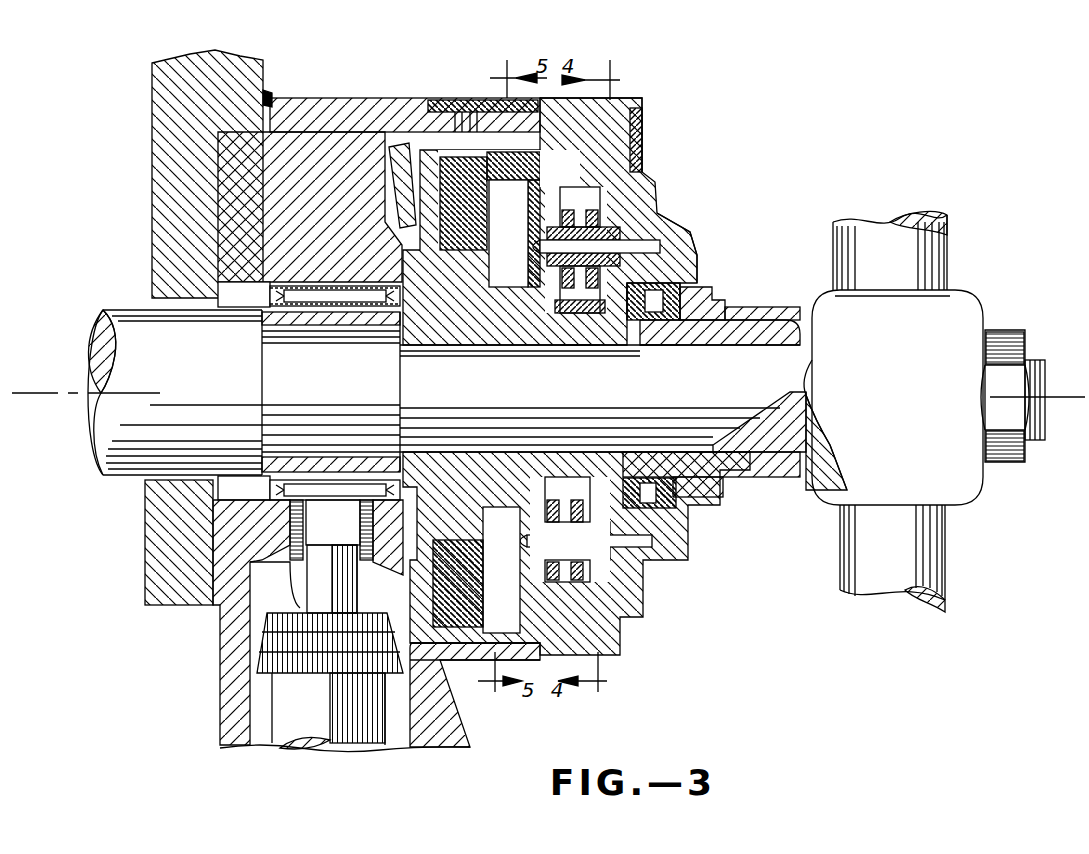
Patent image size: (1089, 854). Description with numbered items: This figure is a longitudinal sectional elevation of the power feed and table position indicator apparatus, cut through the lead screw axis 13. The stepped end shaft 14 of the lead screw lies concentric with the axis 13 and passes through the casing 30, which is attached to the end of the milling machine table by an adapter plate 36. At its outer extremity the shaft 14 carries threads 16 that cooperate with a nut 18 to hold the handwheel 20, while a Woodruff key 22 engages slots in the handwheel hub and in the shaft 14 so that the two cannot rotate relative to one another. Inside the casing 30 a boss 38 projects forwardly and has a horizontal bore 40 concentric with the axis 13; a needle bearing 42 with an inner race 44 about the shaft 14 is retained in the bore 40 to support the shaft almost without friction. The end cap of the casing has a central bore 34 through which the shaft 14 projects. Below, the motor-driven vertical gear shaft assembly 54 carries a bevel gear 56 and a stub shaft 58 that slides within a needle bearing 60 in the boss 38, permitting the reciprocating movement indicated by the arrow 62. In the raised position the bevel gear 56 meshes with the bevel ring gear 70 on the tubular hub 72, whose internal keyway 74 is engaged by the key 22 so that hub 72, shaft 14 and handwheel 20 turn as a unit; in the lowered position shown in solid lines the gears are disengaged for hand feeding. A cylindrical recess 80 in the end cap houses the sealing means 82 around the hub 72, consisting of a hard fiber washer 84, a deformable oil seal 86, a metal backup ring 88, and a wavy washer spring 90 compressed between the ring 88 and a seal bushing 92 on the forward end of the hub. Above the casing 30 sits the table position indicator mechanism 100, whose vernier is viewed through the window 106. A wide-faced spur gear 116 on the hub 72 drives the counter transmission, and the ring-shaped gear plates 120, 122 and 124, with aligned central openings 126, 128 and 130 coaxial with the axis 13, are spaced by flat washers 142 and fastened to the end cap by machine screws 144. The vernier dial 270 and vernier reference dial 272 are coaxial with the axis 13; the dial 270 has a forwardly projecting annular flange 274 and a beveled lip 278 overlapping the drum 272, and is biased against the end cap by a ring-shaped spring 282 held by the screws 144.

The longitudinal axis 13 is at (46, 394).
The stepped end shaft 14 is at (192, 379).
The threads 16 is at (1037, 358).
The nut 18 is at (995, 330).
The handwheel 20 is at (955, 262).
The Woodruff key 22 is at (750, 490).
The casing 30 is at (462, 738).
The central bore 34 is at (606, 348).
The adapter plate 36 is at (240, 60).
The boss 38 is at (262, 556).
The horizontal bore 40 is at (222, 493).
The needle bearing 42 is at (264, 287).
The inner race 44 is at (283, 324).
The gear shaft assembly 54 is at (310, 740).
The bevel gear 56 is at (267, 662).
The stub shaft 58 is at (313, 608).
The needle bearing 60 is at (358, 529).
The arrow 62 is at (327, 574).
The bevel ring gear 70 is at (398, 145).
The hub 72 is at (782, 318).
The keyway 74 is at (700, 500).
The cylindrical recess 80 is at (535, 112).
The sealing means 82 is at (675, 270).
The hard fiber washer 84 is at (686, 248).
The deformable oil seal 86 is at (668, 349).
The metal backup ring 88 is at (668, 290).
The wavy washer spring 90 is at (705, 306).
The seal bushing 92 is at (738, 313).
The table position indicator mechanism 100 is at (289, 99).
The window 106 is at (450, 150).
The spur gear 116 is at (586, 350).
The gear plate 120 is at (625, 235).
The gear plate 122 is at (555, 196).
The gear plate 124 is at (547, 178).
The central opening 126 is at (592, 478).
The central opening 128 is at (565, 478).
The central opening 130 is at (556, 478).
The flat washers 142 is at (560, 245).
The machine screws 144 is at (640, 250).
The vernier dial 270 is at (474, 115).
The vernier reference dial 272 is at (458, 132).
The forwardly projecting annular flange 274 is at (585, 215).
The beveled lip 278 is at (442, 100).
The ring-shaped spring 282 is at (560, 222).